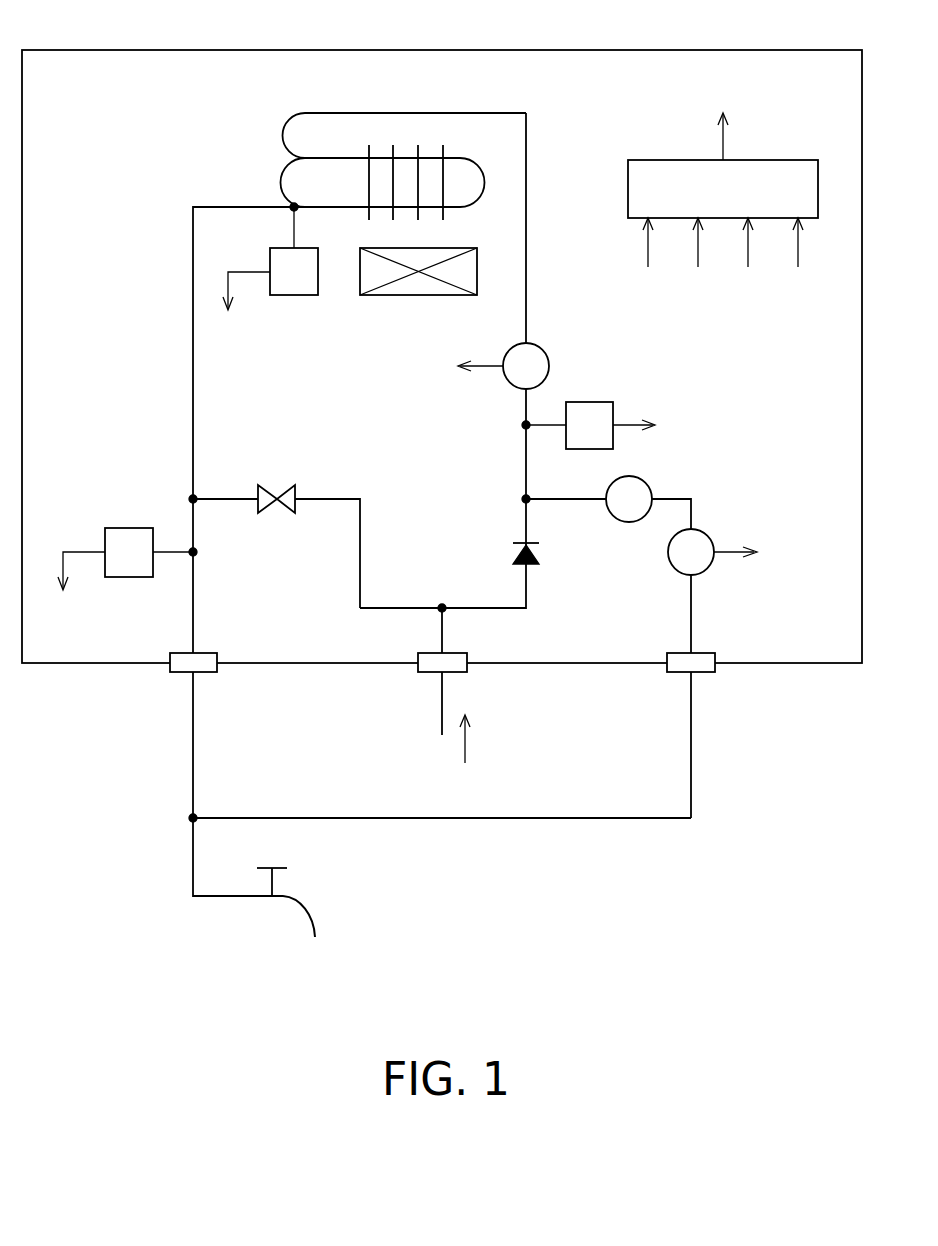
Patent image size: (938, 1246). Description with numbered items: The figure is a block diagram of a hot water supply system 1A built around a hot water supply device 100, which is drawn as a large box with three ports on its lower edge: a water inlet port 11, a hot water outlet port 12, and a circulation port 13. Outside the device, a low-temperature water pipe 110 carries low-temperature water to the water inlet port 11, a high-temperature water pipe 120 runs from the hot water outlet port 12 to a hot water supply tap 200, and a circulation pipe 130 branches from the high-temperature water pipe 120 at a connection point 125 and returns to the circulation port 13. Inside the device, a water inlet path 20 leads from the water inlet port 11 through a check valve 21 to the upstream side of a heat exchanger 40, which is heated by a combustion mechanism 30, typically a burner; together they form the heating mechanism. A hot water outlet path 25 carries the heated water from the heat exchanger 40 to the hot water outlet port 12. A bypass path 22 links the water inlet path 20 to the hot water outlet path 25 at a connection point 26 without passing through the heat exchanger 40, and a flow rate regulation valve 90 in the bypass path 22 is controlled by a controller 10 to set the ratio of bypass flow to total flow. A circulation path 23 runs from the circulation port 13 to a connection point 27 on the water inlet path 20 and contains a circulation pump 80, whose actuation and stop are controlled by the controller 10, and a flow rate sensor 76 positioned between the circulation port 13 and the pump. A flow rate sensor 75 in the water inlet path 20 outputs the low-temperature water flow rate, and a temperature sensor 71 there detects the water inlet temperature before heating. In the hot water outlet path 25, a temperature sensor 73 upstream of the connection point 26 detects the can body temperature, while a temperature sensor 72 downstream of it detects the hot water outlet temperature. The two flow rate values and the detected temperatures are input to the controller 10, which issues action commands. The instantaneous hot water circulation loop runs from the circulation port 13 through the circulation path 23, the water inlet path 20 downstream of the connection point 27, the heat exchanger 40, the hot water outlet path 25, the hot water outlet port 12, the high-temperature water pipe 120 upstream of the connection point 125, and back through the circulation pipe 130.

The hot water supply device 100 is at (800, 50).
The controller 10 is at (768, 160).
The heat exchanger 40 is at (276, 184).
The combustion mechanism 30 is at (390, 296).
The temperature sensor 73 is at (295, 296).
The hot water outlet path 25 is at (193, 363).
The connection point 26 is at (193, 499).
The flow rate regulation valve 90 is at (283, 485).
The temperature sensor 72 is at (130, 528).
The bypass path 22 is at (360, 557).
The connection point 27 is at (522, 498).
The check valve 21 is at (540, 553).
The water inlet path 20 is at (528, 585).
The flow rate sensor 75 is at (545, 345).
The temperature sensor 71 is at (590, 402).
The circulation pump 80 is at (646, 480).
The flow rate sensor 76 is at (708, 536).
The circulation path 23 is at (693, 603).
The water inlet port 11 is at (455, 653).
The hot water outlet port 12 is at (208, 653).
The circulation port 13 is at (700, 653).
The low-temperature water pipe 110 is at (442, 700).
The high-temperature water pipe 120 is at (193, 740).
The connection point 125 is at (193, 818).
The circulation pipe 130 is at (625, 820).
The hot water supply tap 200 is at (269, 905).
The hot water supply system 1A is at (845, 936).